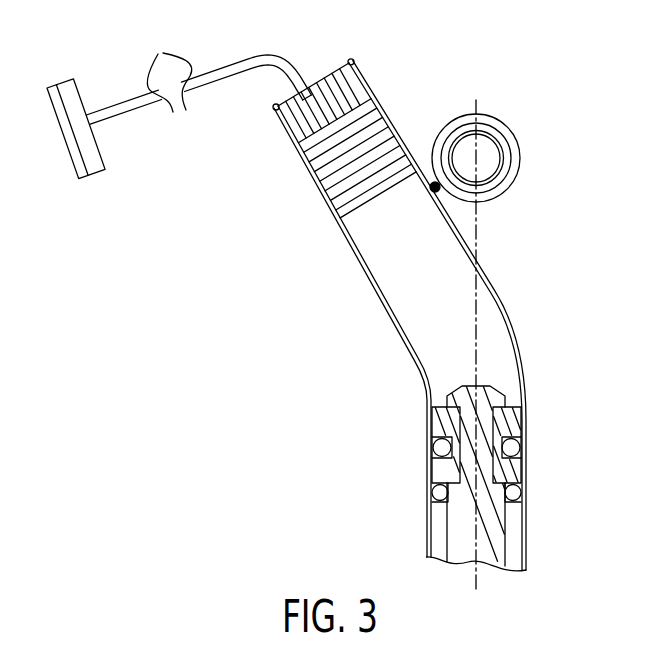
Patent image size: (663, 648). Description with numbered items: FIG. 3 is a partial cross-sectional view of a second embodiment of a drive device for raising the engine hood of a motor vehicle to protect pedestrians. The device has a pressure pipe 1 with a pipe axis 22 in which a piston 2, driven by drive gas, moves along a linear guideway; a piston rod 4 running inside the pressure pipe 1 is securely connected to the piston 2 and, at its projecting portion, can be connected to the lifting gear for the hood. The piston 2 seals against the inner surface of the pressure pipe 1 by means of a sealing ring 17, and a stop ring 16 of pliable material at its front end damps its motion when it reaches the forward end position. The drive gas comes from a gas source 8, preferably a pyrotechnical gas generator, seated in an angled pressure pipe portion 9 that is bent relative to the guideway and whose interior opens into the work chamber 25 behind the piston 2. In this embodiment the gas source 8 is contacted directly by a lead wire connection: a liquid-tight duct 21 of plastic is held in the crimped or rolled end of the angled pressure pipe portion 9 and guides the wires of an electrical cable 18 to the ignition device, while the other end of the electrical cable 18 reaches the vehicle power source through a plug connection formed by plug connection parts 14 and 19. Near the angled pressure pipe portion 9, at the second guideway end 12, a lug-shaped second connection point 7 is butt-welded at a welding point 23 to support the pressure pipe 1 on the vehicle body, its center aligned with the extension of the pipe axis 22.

The pressure pipe 1 is at (427, 510).
The piston 2 is at (443, 427).
The piston rod 4 is at (487, 548).
The second connection point 7 is at (488, 147).
The gas source 8 is at (340, 190).
The angled pressure pipe portion 9 is at (388, 307).
The second guideway end 12 is at (546, 424).
The plug connection part 14 is at (72, 98).
The stop ring 16 is at (514, 490).
The sealing ring 17 is at (512, 448).
The electrical cable 18 is at (198, 70).
The matching plug connection part 19 is at (73, 152).
The liquid-tight duct 21 is at (290, 128).
The pipe axis 22 is at (470, 548).
The welding point 23 is at (431, 188).
The work chamber 25 is at (487, 317).